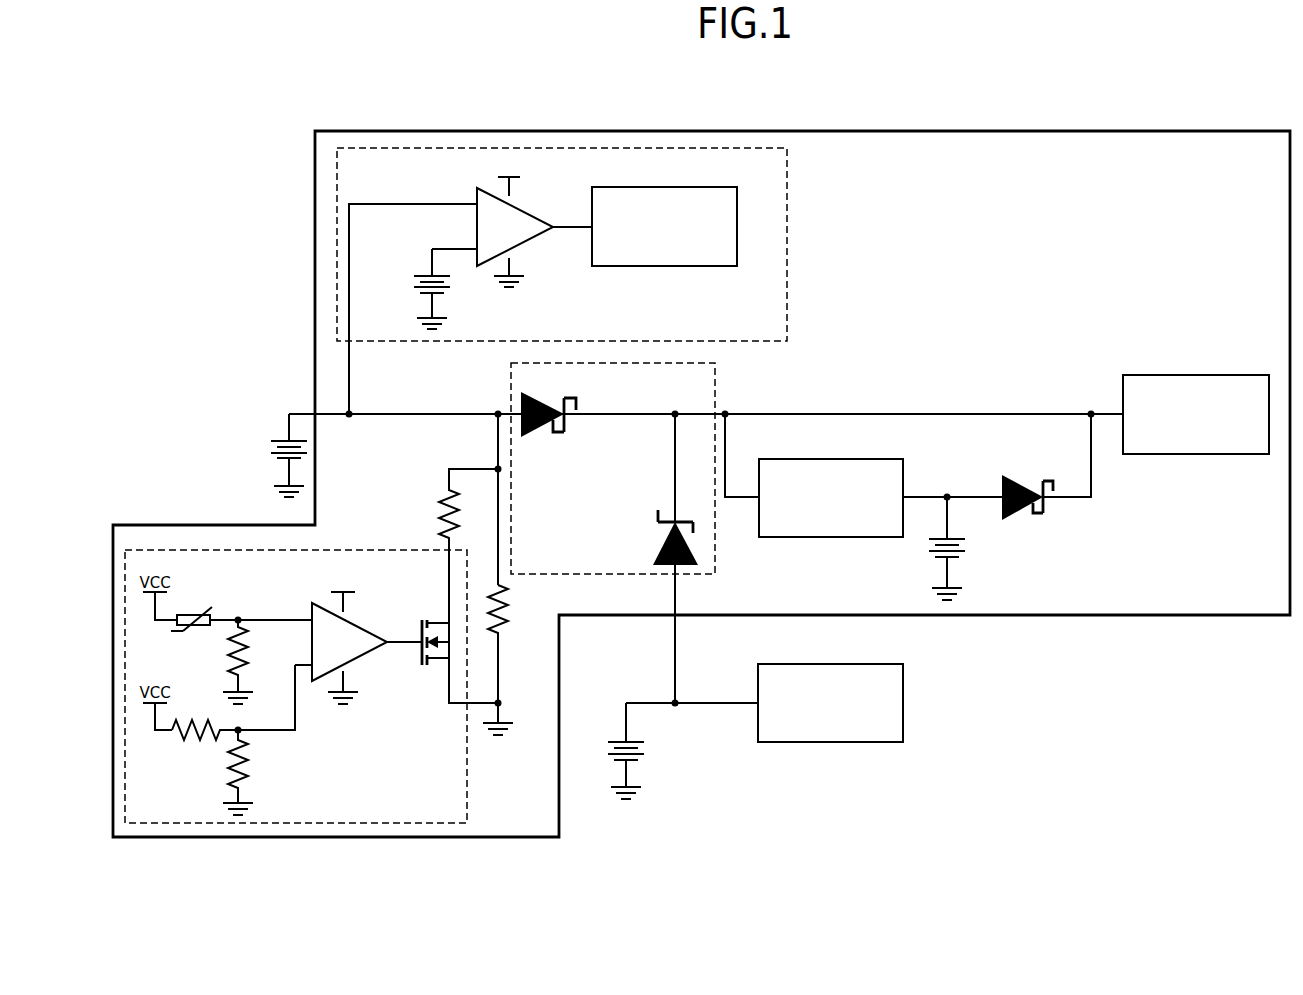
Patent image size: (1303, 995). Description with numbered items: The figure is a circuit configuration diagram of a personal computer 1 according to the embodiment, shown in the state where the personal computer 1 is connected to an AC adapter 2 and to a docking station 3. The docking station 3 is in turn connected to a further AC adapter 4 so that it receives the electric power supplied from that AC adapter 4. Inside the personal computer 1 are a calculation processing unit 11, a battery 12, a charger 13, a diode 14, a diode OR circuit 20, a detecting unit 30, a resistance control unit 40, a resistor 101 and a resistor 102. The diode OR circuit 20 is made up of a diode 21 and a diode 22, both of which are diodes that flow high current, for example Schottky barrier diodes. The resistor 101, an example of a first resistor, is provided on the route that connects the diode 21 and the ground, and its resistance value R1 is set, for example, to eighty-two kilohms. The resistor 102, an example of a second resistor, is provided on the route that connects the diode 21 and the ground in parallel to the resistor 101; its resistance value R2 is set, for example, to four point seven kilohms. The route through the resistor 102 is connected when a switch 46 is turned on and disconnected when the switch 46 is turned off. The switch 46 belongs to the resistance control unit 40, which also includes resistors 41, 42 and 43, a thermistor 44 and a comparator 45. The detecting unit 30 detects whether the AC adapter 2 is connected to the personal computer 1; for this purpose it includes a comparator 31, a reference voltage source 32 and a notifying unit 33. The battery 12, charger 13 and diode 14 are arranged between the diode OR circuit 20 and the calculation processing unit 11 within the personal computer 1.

The personal computer 1 is at (372, 131).
The AC adapter 2 is at (282, 440).
The docking station 3 is at (865, 664).
The AC adapter 4 is at (638, 742).
The calculation processing unit 11 is at (1226, 375).
The battery 12 is at (959, 539).
The charger 13 is at (868, 459).
The diode 14 is at (1023, 481).
The diode OR circuit 20 is at (716, 386).
The diode 21 is at (536, 392).
The diode 22 is at (663, 548).
The detecting unit 30 is at (789, 228).
The comparator 31 is at (537, 212).
The reference voltage source 32 is at (420, 274).
The notifying unit 33 is at (715, 187).
The resistance control unit 40 is at (373, 550).
The resistor 41 is at (250, 762).
The resistor 42 is at (196, 740).
The resistor 43 is at (250, 650).
The thermistor 44 is at (193, 614).
The comparator 45 is at (366, 628).
The switch 46 is at (422, 663).
The resistor 101 is at (508, 600).
The resistor 102 is at (447, 503).